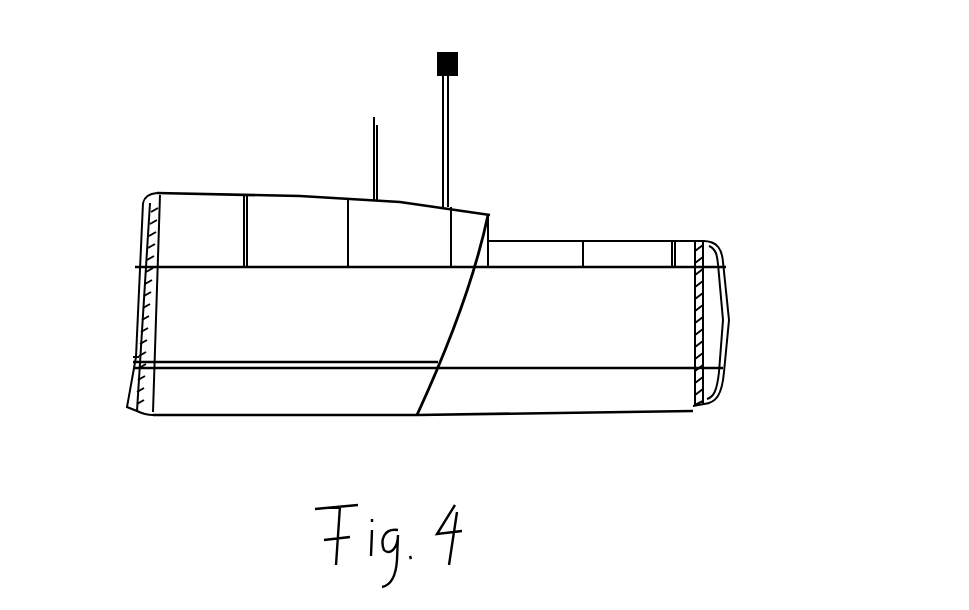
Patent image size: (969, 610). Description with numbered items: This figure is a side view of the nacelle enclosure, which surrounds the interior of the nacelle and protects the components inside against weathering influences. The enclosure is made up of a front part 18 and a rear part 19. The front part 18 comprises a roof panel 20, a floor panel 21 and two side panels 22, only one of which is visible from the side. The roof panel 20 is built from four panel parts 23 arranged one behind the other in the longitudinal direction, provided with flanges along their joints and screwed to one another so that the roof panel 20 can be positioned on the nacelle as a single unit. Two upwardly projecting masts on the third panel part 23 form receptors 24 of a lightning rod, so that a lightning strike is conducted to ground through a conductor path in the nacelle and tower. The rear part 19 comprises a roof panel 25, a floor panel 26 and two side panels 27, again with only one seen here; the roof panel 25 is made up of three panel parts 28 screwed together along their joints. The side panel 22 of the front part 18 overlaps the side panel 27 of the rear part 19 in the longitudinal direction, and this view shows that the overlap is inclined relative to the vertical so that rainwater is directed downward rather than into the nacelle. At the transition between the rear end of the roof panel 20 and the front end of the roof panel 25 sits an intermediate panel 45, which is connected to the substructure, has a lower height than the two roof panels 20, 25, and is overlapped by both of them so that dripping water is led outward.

The front part 18 is at (132, 527).
The rear part 19 is at (633, 495).
The roof panel 20 is at (200, 220).
The floor panel 21 is at (280, 437).
The side panel 22 is at (192, 313).
The panel part 23 is at (368, 292).
The receptor 24 is at (493, 62).
The roof panel 25 is at (640, 185).
The floor panel 26 is at (543, 430).
The side panel 27 is at (765, 305).
The panel part 28 is at (633, 253).
The intermediate panel 45 is at (538, 182).